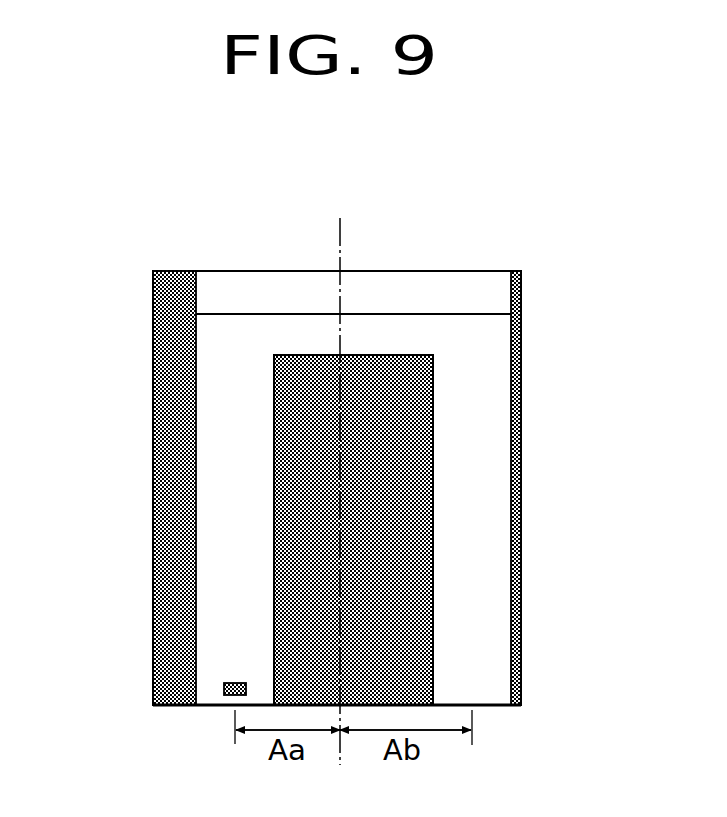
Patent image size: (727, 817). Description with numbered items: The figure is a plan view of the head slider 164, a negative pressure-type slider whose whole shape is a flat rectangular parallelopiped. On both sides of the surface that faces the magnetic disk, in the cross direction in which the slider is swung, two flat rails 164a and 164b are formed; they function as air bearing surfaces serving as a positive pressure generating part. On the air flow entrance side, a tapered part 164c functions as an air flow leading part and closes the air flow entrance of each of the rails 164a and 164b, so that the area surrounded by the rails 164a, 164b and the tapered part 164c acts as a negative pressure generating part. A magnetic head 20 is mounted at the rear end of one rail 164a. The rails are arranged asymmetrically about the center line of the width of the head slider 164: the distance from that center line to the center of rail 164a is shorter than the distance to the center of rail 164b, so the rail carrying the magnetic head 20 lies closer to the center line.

The head slider 164 is at (272, 226).
The rail 164a is at (213, 463).
The rail 164b is at (483, 490).
The tapered part 164c is at (452, 292).
The magnetic head 20 is at (228, 690).